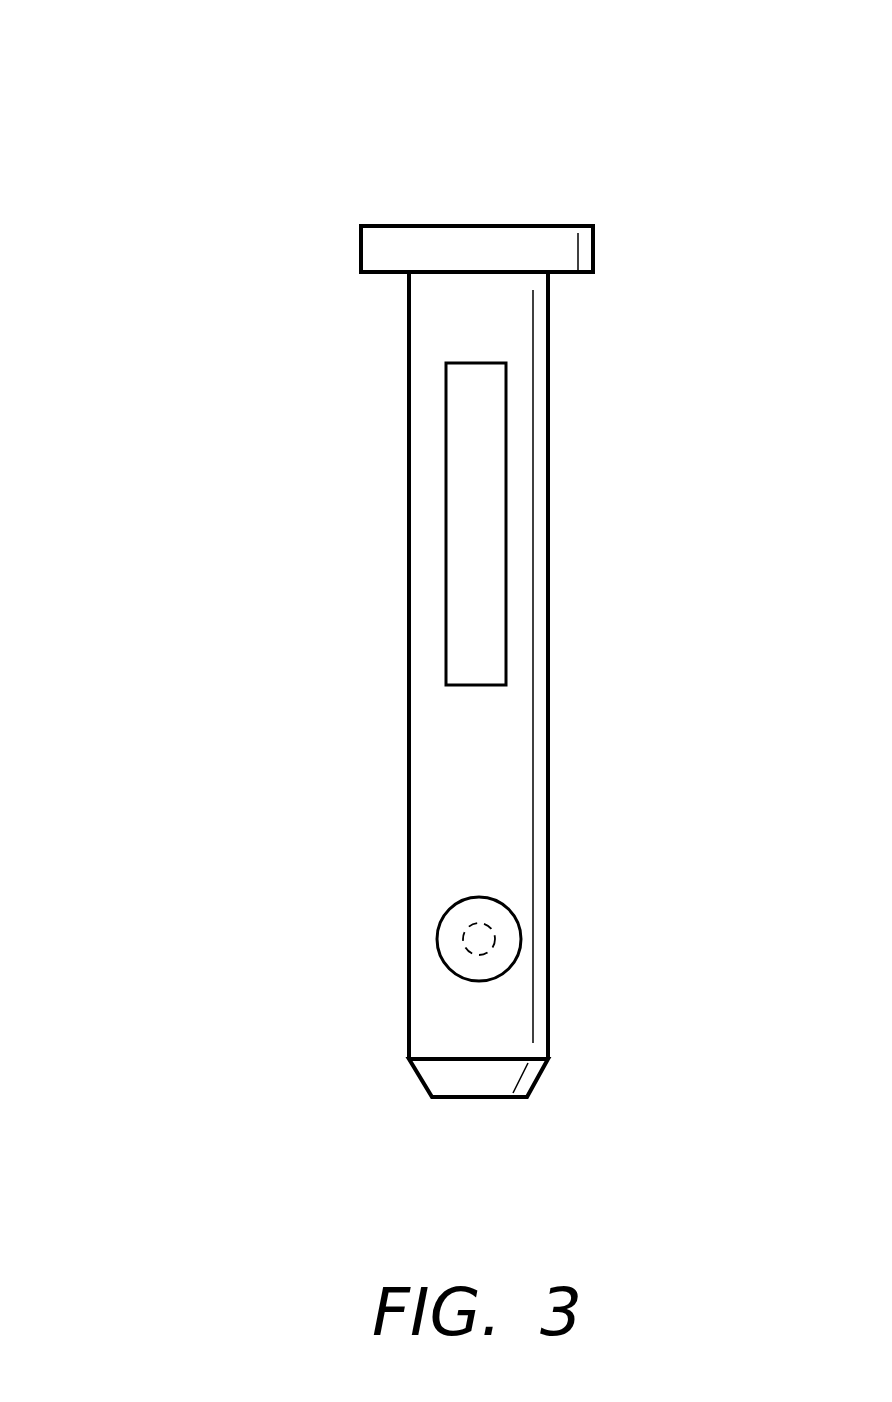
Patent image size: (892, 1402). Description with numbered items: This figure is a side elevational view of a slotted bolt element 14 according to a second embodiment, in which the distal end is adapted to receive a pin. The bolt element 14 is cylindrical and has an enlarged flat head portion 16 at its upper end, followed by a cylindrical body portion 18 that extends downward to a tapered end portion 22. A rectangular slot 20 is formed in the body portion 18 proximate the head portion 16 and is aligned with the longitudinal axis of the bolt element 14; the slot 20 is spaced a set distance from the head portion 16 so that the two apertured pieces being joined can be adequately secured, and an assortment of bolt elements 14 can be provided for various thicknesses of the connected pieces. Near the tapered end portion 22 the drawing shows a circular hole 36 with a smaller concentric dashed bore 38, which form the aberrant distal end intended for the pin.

The cylindrical bolt element 14 is at (232, 152).
The enlarged flat head portion 16 is at (537, 240).
The cylindrical body portion 18 is at (488, 800).
The slot 20 is at (460, 535).
The tapered end portion 22 is at (420, 1078).
The hole 36 is at (463, 935).
The inner bore 38 is at (515, 957).